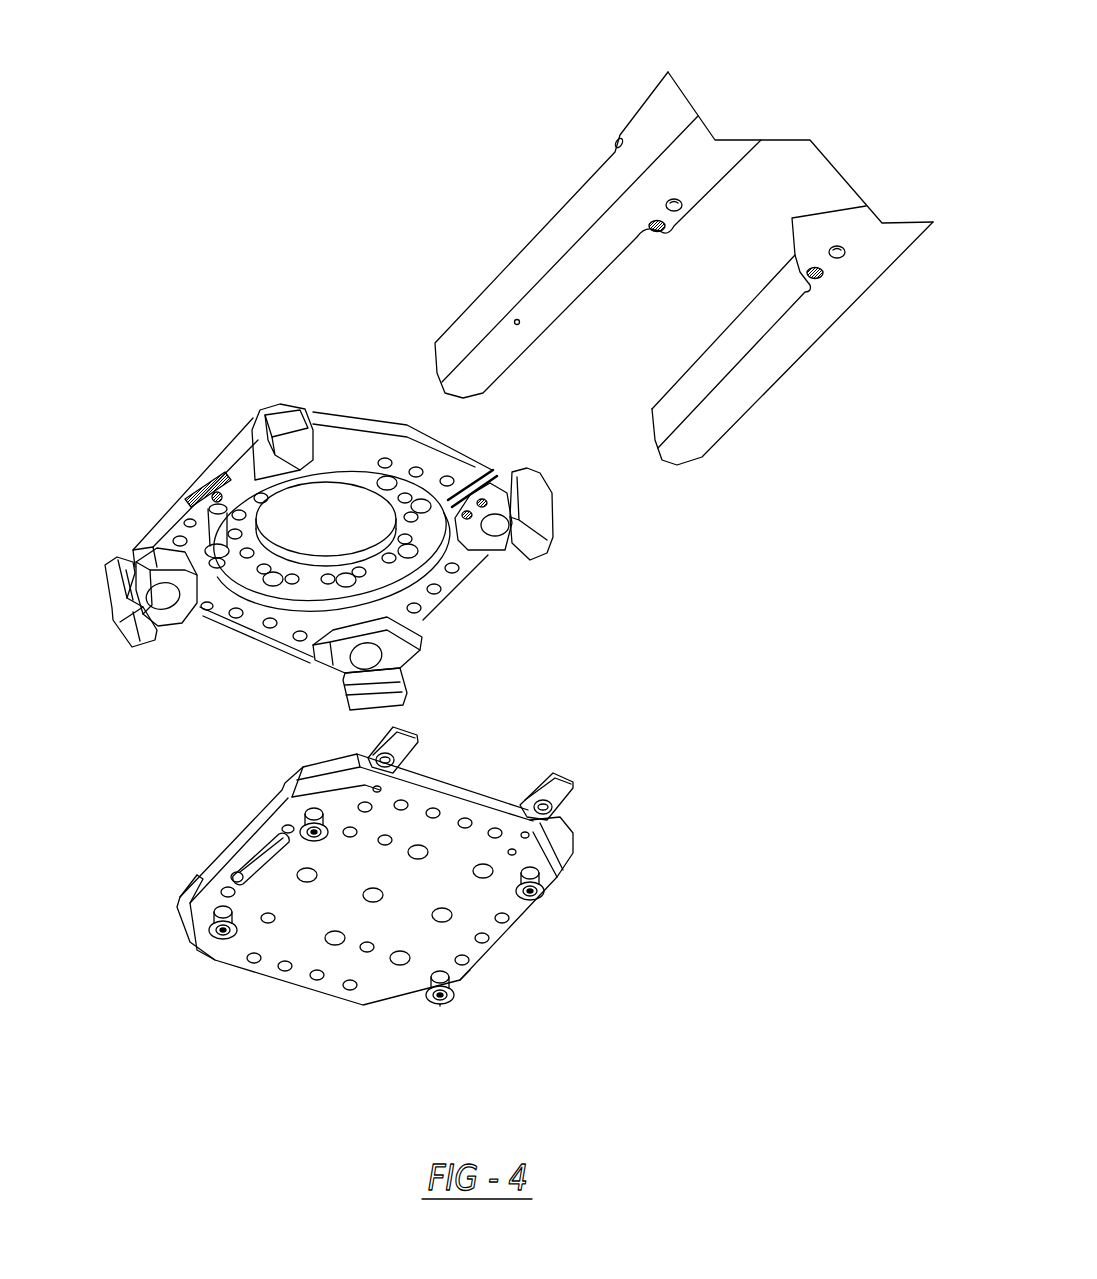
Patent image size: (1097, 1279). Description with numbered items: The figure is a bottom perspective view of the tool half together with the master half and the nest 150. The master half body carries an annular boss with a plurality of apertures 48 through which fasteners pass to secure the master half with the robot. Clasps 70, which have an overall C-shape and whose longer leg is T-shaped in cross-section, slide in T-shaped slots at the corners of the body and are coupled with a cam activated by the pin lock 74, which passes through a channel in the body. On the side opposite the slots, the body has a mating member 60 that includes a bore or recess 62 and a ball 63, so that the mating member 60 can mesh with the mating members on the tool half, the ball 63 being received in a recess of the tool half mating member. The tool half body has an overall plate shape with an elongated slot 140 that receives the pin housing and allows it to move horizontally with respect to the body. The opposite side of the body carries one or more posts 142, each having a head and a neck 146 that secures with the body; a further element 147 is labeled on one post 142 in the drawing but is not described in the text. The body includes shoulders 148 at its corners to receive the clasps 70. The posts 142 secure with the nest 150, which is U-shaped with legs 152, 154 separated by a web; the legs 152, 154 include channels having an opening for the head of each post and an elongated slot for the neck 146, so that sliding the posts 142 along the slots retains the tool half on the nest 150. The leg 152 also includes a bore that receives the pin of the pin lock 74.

The apertures 48 is at (219, 470).
The mating member 60 is at (309, 540).
The bore or recess 62 is at (430, 663).
The ball 63 is at (373, 655).
The clasps 70 is at (100, 597).
The pin lock 74 is at (188, 508).
The elongated slot 140 is at (421, 926).
The posts 142 is at (457, 1002).
The neck 146 is at (460, 980).
The bolt shaft 147 is at (437, 1012).
The shoulders 148 is at (560, 863).
The nest 150 is at (684, 242).
The leg 152 is at (538, 244).
The leg 154 is at (770, 370).